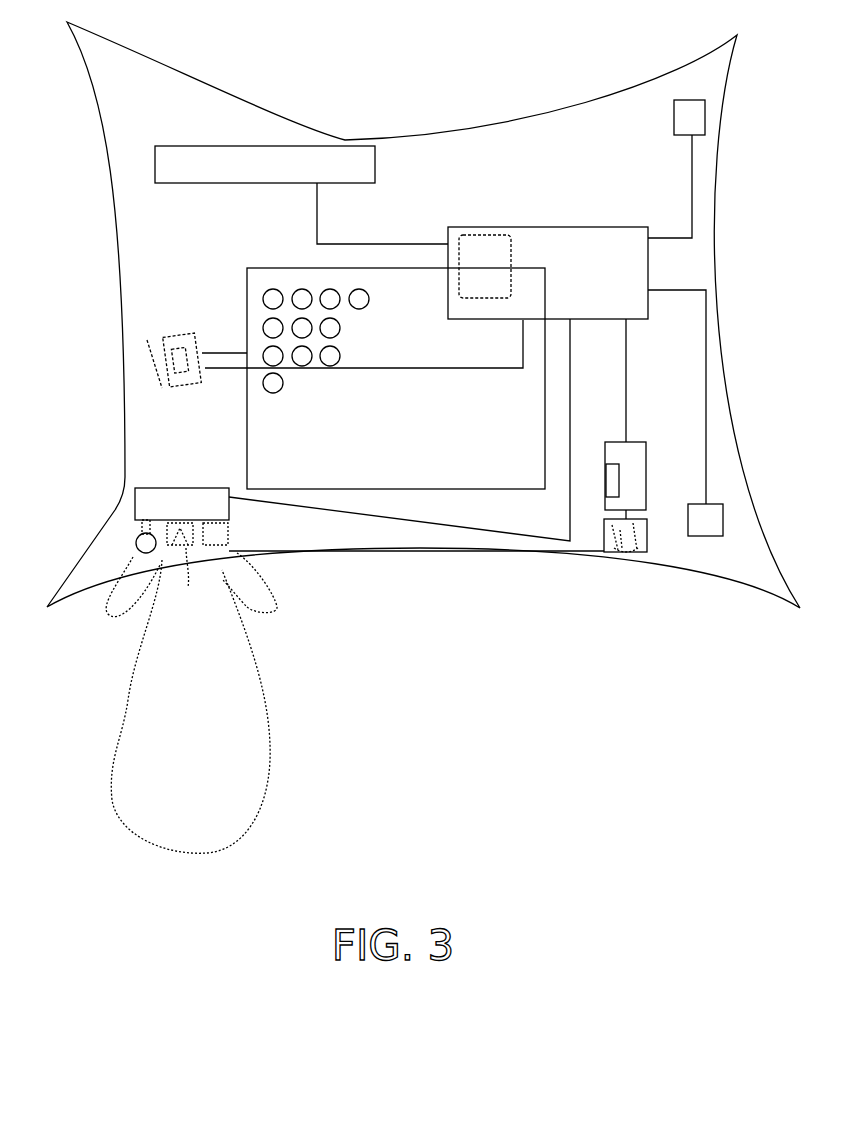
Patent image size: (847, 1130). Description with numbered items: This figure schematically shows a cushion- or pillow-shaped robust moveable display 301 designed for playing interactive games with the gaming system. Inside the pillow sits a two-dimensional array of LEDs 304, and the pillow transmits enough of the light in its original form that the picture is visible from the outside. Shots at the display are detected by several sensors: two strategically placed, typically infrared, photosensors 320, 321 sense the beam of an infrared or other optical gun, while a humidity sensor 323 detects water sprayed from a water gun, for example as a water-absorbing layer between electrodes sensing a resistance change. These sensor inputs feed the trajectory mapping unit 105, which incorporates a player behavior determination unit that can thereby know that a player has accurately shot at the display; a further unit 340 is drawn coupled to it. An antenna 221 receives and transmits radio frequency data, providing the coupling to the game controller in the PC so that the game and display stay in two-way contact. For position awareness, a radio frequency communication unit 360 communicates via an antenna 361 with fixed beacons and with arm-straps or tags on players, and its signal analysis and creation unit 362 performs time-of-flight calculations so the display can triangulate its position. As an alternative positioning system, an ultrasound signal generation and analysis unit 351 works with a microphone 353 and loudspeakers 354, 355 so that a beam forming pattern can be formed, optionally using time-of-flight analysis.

The pillow-shaped robust moveable display 301 is at (112, 120).
The humidity sensor 323 is at (207, 180).
The photosensor 320 is at (706, 118).
The trajectory mapping unit 105 is at (585, 238).
The communication module 340 is at (483, 246).
The two-dimensional array of LEDs 304 is at (490, 483).
The antenna 221 is at (180, 386).
The radio frequency communication unit 360 is at (635, 448).
The signal analysis and creation unit 362 is at (620, 485).
The antenna 361 is at (650, 540).
The photosensor 321 is at (715, 515).
The ultrasound signal generation and analysis unit 351 is at (143, 500).
The microphone 353 is at (135, 545).
The loudspeaker 354 is at (183, 545).
The loudspeaker 355 is at (228, 535).